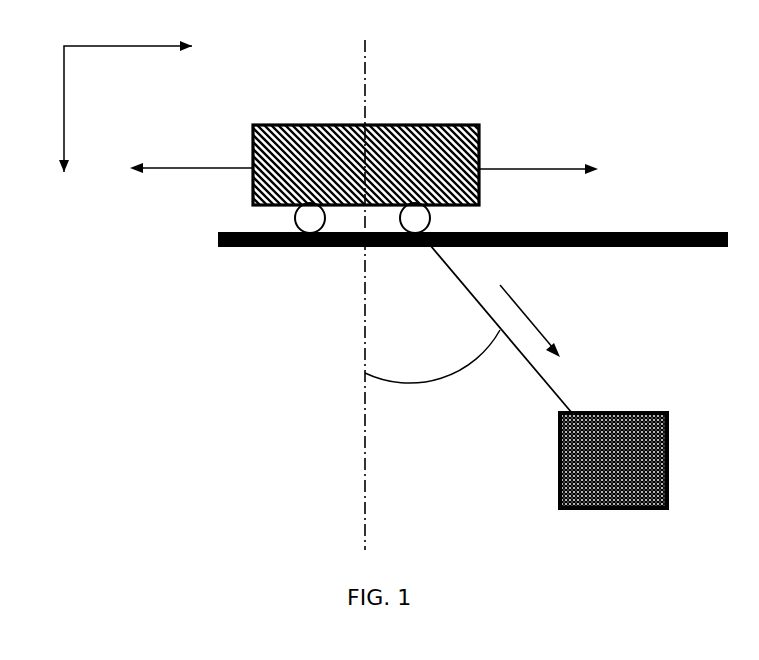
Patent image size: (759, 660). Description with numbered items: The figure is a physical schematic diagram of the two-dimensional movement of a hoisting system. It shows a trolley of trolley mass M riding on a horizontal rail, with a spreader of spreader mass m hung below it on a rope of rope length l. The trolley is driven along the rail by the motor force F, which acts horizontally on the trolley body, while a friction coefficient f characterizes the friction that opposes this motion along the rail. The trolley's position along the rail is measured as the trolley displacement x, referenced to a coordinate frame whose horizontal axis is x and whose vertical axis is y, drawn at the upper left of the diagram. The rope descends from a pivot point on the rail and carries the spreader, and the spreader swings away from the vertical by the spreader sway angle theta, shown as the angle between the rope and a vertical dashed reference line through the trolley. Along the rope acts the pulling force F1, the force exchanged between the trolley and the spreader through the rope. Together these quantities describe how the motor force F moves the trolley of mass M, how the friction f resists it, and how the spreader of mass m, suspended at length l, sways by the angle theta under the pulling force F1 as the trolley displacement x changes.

The trolley mass M is at (363, 165).
The spreader mass m is at (546, 447).
The motor force F is at (191, 160).
The friction coefficient f is at (538, 158).
The pulling force between the trolley and the spreader F1 is at (530, 321).
The rope length l is at (501, 329).
The spreader sway angle theta is at (432, 356).
The trolley displacement x is at (128, 95).
The y axis y is at (49, 152).